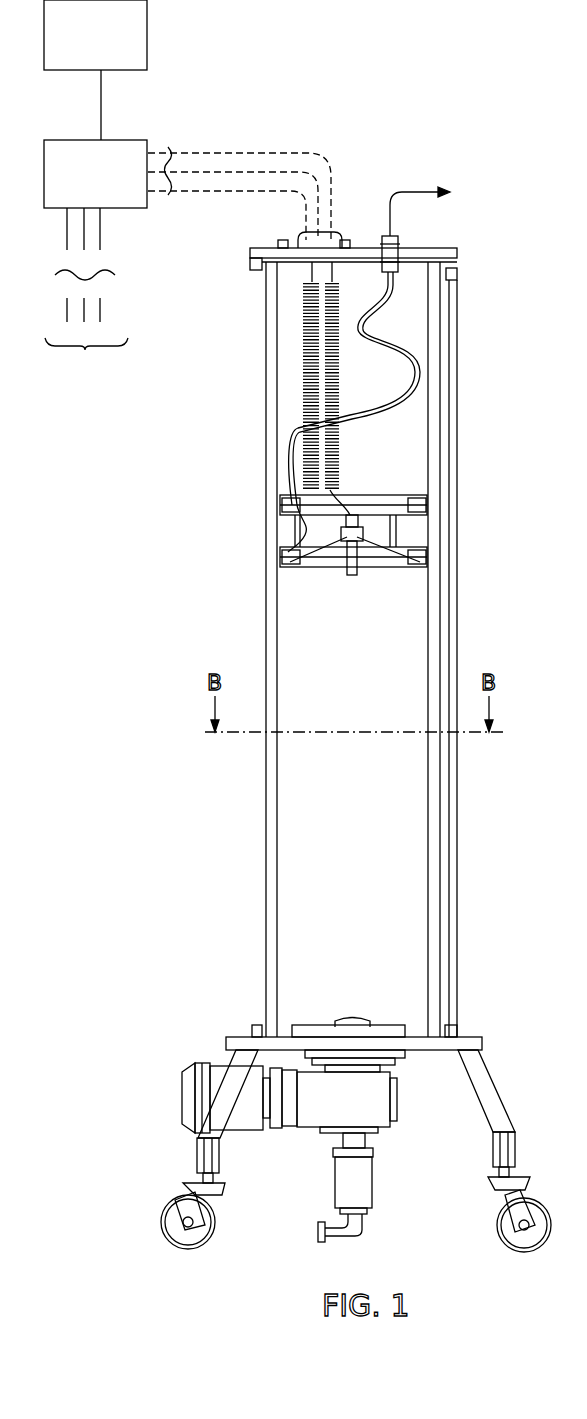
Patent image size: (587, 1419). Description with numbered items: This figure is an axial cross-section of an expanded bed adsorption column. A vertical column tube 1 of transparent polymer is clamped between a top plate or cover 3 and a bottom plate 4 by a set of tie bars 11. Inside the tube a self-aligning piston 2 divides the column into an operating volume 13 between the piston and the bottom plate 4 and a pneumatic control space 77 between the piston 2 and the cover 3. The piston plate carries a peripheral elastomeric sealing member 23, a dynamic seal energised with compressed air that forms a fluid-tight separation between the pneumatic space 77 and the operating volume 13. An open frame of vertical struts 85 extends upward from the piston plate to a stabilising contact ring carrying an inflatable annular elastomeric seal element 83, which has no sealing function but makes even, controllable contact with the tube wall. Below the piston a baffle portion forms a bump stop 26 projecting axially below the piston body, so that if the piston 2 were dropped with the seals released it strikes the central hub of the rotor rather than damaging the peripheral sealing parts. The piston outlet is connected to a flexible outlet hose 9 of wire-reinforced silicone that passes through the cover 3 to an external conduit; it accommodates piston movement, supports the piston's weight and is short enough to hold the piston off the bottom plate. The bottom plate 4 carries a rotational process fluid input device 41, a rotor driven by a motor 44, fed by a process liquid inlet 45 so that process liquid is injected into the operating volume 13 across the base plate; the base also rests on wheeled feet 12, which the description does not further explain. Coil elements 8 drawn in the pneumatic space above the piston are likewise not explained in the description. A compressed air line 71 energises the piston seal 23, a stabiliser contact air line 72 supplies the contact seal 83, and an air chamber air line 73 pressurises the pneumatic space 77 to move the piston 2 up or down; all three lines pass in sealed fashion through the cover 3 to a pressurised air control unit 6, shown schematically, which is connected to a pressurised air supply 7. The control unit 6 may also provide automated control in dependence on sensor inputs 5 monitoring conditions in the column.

The column tube 1 is at (265, 770).
The tie bars 11 is at (458, 782).
The operating volume 13 is at (394, 805).
The self-aligning piston 2 is at (398, 495).
The peripheral elastomeric sealing member 23 is at (285, 555).
The baffle portion or bump stop 26 is at (352, 570).
The top plate or cover 3 is at (425, 250).
The bottom plate 4 is at (410, 1052).
The rotational process fluid input device 41 is at (375, 1025).
The motor 44 is at (183, 1092).
The process liquid inlet 45 is at (330, 1230).
The caster wheel 12 is at (197, 1178).
The sensor inputs 5 is at (85, 350).
The pressurised air control unit 6 is at (135, 140).
The pressurised air supply 7 is at (147, 20).
The compressed air line 71 is at (207, 197).
The stabiliser contact air line 72 is at (250, 178).
The air chamber air line 73 is at (313, 158).
The pneumatic control space 77 is at (379, 377).
The spring 8 is at (283, 503).
The inflatable annular elastomeric seal element 83 is at (430, 507).
The vertical struts 85 is at (398, 528).
The flexible outlet hose 9 is at (416, 365).